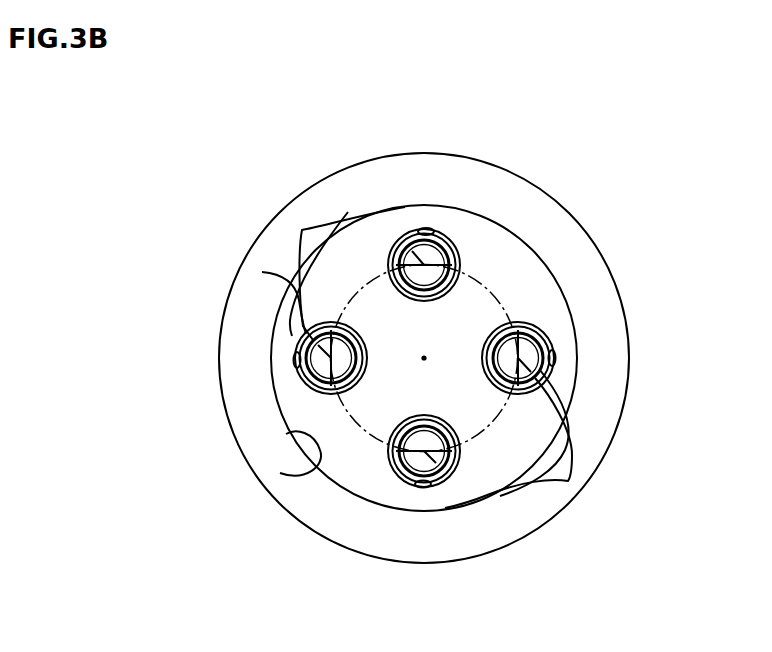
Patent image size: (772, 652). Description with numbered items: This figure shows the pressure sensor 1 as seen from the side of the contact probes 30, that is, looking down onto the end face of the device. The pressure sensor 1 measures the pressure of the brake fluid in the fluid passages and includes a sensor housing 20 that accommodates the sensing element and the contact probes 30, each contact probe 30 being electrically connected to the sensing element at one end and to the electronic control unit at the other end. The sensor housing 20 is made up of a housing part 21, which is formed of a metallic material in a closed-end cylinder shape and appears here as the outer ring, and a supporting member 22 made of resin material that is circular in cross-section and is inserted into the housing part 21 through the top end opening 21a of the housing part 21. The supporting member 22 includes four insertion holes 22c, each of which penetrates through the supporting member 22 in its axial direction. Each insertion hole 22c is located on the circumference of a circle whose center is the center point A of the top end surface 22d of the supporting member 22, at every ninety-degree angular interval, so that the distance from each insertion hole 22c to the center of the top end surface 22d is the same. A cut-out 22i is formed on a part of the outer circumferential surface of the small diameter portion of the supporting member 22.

The pressure sensor 1 is at (492, 146).
The sensor housing 20 is at (578, 224).
The housing part 21 is at (603, 281).
The top end opening 21a is at (282, 473).
The supporting member 22 is at (368, 466).
The insertion hole 22c is at (434, 232).
The top end surface 22d is at (560, 333).
The cut-out 22i is at (262, 272).
The contact probe 30 is at (302, 230).
The center point A is at (425, 358).